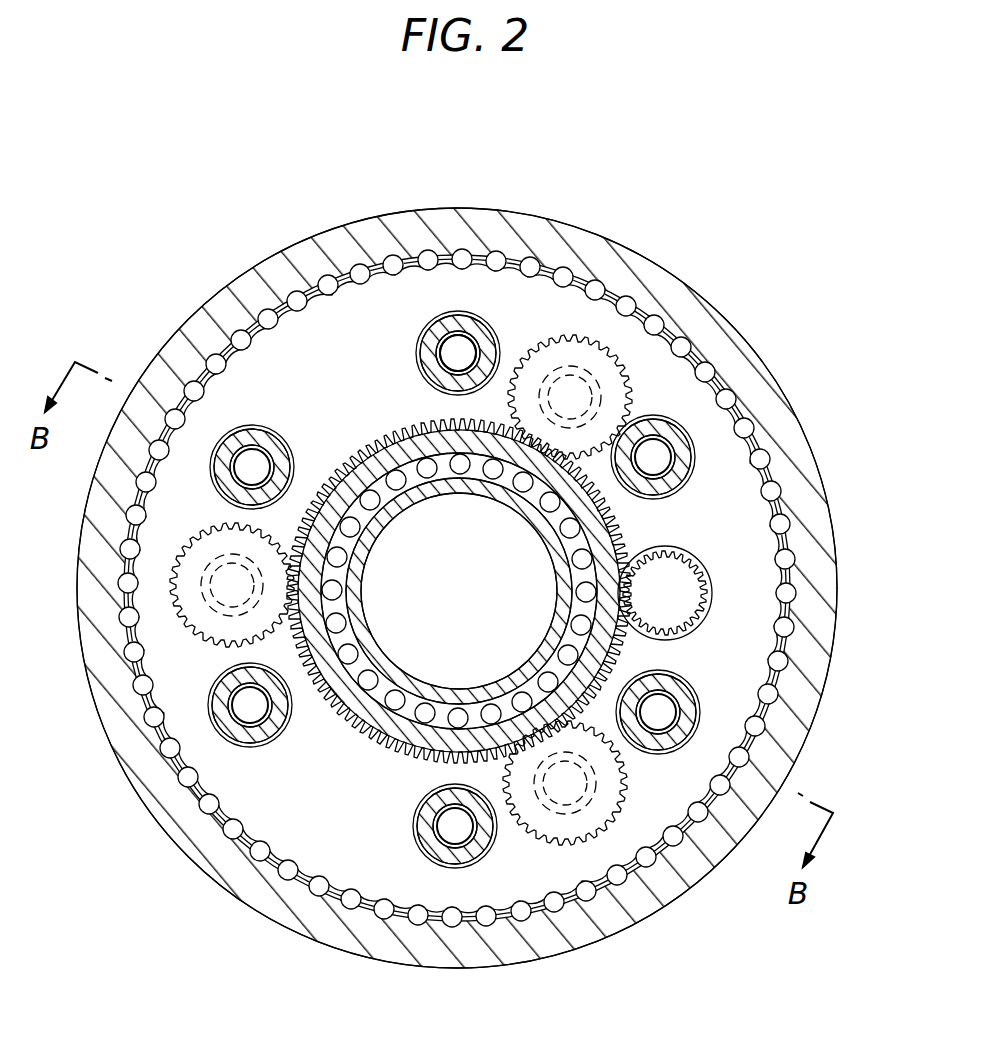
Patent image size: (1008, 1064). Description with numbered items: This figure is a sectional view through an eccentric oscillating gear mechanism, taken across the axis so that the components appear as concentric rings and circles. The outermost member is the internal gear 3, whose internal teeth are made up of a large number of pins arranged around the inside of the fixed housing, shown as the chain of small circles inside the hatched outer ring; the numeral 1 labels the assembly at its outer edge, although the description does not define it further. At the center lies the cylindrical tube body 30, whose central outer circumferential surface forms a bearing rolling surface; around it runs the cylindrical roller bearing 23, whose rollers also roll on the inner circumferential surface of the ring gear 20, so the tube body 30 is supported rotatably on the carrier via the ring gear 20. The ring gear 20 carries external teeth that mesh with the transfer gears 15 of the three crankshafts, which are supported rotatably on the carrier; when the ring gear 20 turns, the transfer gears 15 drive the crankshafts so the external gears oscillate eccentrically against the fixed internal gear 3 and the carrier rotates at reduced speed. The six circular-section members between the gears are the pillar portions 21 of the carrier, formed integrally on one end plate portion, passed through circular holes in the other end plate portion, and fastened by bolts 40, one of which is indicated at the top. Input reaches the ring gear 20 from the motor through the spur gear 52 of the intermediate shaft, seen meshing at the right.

The reduction gear unit 1 is at (207, 314).
The internal gear 3 is at (283, 263).
The transfer gears 15 is at (610, 348).
The ring gear 20 is at (415, 415).
The pillar portions 21 is at (447, 318).
The cylindrical roller bearing 23 is at (423, 712).
The cylindrical tube body 30 is at (473, 693).
The bolts 40 is at (465, 347).
The spur gear 52 is at (693, 600).